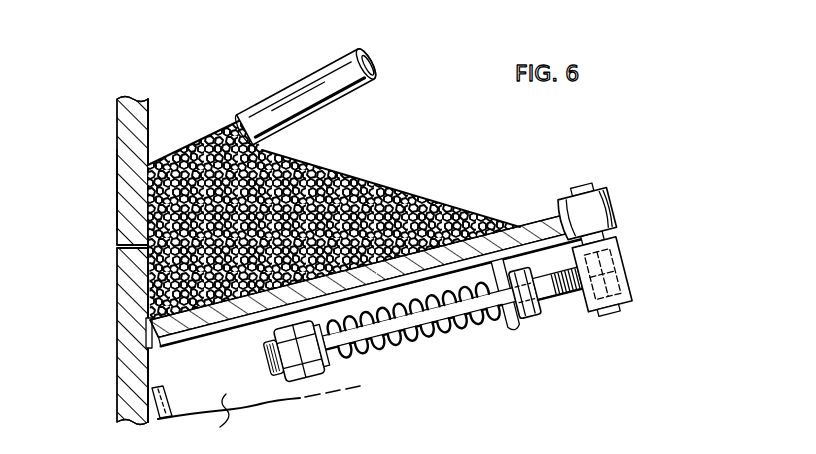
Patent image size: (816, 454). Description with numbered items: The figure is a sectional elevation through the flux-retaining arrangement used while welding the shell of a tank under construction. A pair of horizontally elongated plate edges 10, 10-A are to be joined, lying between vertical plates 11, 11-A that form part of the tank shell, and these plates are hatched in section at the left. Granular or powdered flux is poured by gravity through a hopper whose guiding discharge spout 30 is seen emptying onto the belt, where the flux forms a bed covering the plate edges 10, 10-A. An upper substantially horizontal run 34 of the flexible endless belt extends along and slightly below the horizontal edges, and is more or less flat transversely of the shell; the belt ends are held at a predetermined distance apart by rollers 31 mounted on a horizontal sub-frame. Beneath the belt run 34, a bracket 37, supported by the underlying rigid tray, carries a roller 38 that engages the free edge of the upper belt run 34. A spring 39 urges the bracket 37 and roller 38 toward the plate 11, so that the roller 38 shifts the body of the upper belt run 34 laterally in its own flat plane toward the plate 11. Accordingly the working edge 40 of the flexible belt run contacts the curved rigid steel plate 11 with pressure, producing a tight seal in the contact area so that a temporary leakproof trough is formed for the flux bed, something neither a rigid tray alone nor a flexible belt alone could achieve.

The plate edge 10 is at (126, 244).
The plate edge 10-A is at (130, 252).
The vertical plate 11 is at (117, 284).
The vertical plate 11-A is at (117, 192).
The guiding discharge spout 30 is at (282, 86).
The roller 31 is at (222, 412).
The upper run of the belt 34 is at (531, 228).
The bracket 37 is at (631, 298).
The roller 38 is at (613, 205).
The spring 39 is at (470, 333).
The working edge 40 is at (148, 330).